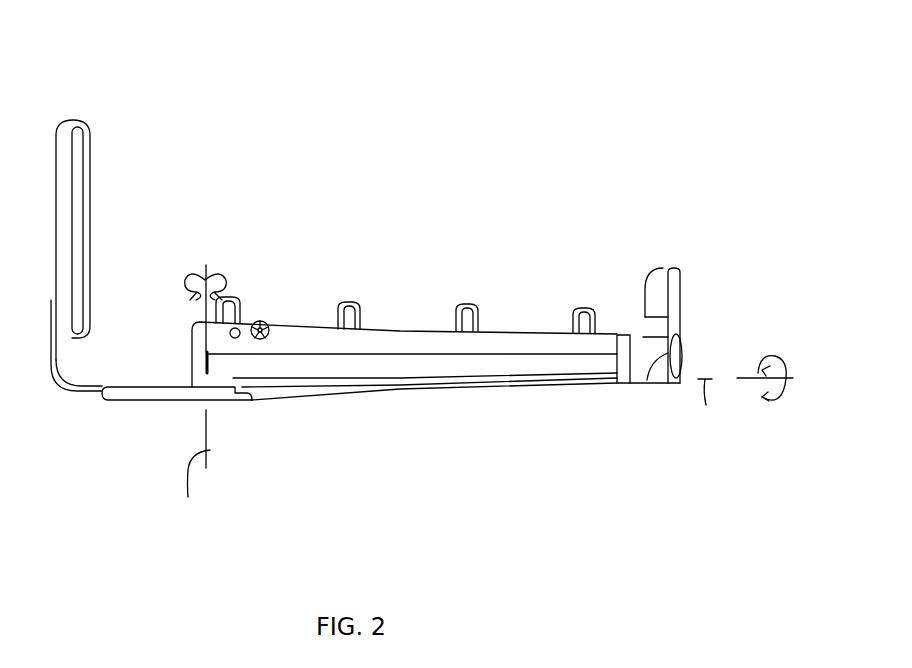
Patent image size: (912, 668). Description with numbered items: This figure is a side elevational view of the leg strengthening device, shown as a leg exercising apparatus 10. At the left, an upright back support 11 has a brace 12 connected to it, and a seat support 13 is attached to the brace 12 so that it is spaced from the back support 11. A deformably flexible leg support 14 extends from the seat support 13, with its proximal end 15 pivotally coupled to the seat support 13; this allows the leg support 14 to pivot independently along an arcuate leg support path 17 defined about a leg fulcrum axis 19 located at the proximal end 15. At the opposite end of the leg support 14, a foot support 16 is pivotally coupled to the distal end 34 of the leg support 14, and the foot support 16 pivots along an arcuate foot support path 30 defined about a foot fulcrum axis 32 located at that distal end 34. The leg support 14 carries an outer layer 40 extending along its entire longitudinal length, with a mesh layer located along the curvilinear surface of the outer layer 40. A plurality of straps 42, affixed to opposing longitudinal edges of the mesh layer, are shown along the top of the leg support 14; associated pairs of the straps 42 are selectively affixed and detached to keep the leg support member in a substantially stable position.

The leg exercising apparatus 10 is at (303, 117).
The back support 11 is at (73, 125).
The brace 12 is at (67, 385).
The seat support 13 is at (123, 397).
The leg support 14 is at (565, 408).
The proximal end 15 is at (216, 373).
The foot support 16 is at (662, 267).
The arcuate leg support path 17 is at (193, 270).
The leg fulcrum axis 19 is at (195, 495).
The arcuate foot support path 30 is at (778, 360).
The foot fulcrum axis 32 is at (702, 412).
The distal end 34 is at (603, 368).
The outer layer 40 is at (342, 372).
The straps 42 is at (227, 300).